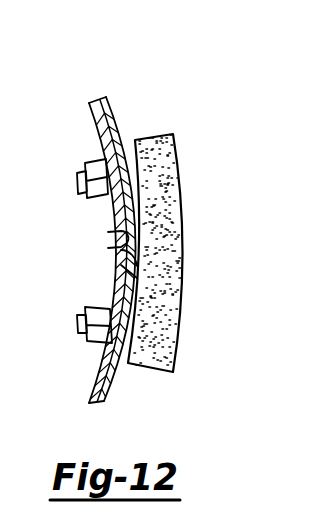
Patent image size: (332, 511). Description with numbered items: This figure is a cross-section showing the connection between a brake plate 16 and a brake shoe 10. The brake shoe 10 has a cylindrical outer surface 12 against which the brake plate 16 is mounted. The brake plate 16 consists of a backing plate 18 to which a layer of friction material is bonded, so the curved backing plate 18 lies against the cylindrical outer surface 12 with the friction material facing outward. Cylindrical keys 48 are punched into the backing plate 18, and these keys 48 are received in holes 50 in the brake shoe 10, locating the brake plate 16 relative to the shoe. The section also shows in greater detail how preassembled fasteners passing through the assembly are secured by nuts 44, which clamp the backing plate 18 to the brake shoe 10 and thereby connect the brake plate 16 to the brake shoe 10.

The brake shoe 10 is at (110, 97).
The cylindrical outer surface 12 is at (108, 373).
The brake plate 16 is at (167, 132).
The backing plate 18 is at (122, 366).
The nuts 44 is at (84, 160).
The cylindrical keys 48 is at (112, 233).
The holes 50 is at (115, 251).